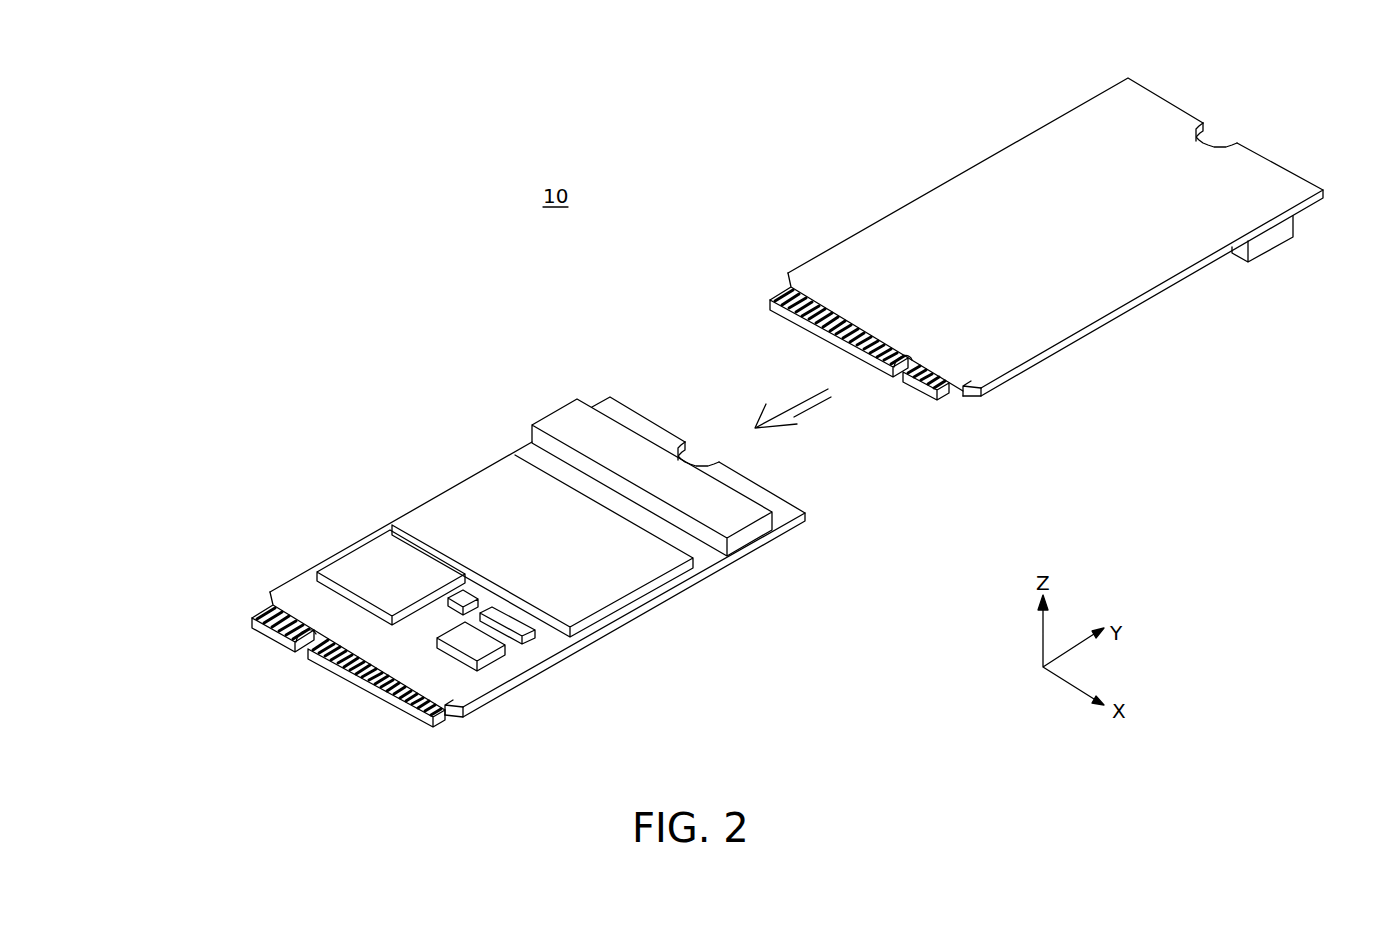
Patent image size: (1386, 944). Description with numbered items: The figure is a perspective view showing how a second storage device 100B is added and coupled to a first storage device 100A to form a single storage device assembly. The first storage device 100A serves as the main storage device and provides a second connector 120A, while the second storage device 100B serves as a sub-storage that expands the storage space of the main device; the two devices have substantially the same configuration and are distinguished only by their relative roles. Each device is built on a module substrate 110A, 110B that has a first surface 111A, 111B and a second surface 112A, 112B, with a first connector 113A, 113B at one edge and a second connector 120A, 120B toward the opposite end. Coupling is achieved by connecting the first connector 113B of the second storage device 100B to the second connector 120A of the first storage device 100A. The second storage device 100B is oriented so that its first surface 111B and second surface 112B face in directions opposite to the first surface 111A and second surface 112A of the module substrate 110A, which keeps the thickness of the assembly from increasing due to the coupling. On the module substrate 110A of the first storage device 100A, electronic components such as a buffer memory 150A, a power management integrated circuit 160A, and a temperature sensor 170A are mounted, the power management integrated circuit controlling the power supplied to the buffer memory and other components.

The first storage device 100A is at (398, 428).
The second storage device 100B is at (920, 108).
The module substrate 110A is at (300, 591).
The module substrate 110B is at (816, 270).
The first surface 111A is at (453, 694).
The first surface 111B is at (968, 372).
The second surface 112A is at (462, 718).
The second surface 112B is at (975, 402).
The first connector 113A is at (266, 606).
The first connector 113B is at (782, 292).
The second connector 120A is at (560, 420).
The second connector 120B is at (1270, 243).
The buffer memory 150A is at (486, 649).
The power management integrated circuit 160A is at (531, 630).
The temperature sensor 170A is at (465, 594).